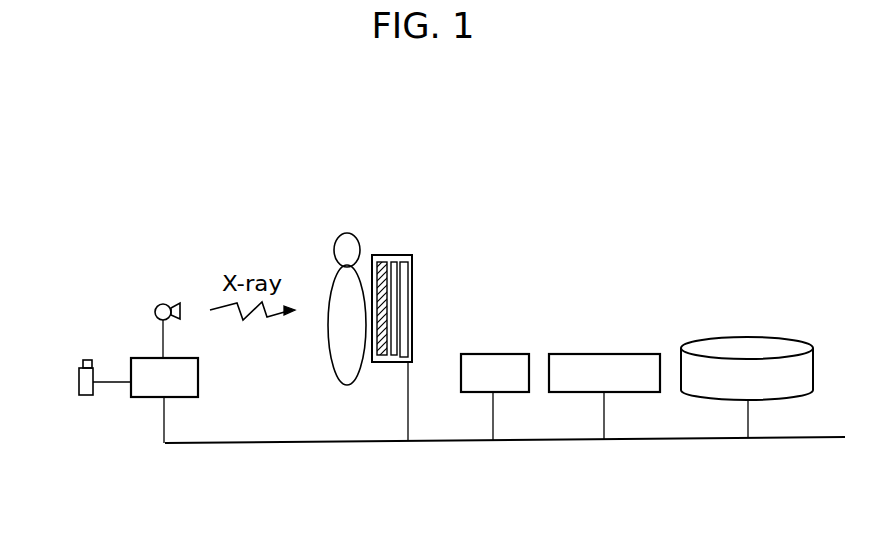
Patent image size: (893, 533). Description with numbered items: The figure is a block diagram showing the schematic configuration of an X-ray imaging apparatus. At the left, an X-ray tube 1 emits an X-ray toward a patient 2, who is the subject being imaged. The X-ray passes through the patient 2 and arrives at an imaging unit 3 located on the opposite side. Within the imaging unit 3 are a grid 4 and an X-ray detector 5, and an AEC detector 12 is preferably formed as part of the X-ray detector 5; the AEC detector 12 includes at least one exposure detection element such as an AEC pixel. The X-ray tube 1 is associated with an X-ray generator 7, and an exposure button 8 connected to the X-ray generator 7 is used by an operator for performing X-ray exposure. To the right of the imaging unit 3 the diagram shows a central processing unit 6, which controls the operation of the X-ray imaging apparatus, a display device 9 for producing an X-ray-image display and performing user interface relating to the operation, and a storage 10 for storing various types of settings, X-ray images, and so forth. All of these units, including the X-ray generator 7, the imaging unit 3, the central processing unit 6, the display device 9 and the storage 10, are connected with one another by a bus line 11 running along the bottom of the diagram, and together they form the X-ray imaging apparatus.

The X-ray tube 1 is at (161, 303).
The patient 2 is at (333, 250).
The imaging unit 3 is at (413, 323).
The grid 4 is at (378, 262).
The AEC detector 12 is at (395, 262).
The X-ray detector 5 is at (404, 262).
The central processing unit 6 is at (507, 353).
The X-ray generator 7 is at (198, 377).
The exposure button 8 is at (83, 360).
The display device 9 is at (597, 353).
The storage 10 is at (733, 336).
The bus line 11 is at (320, 447).